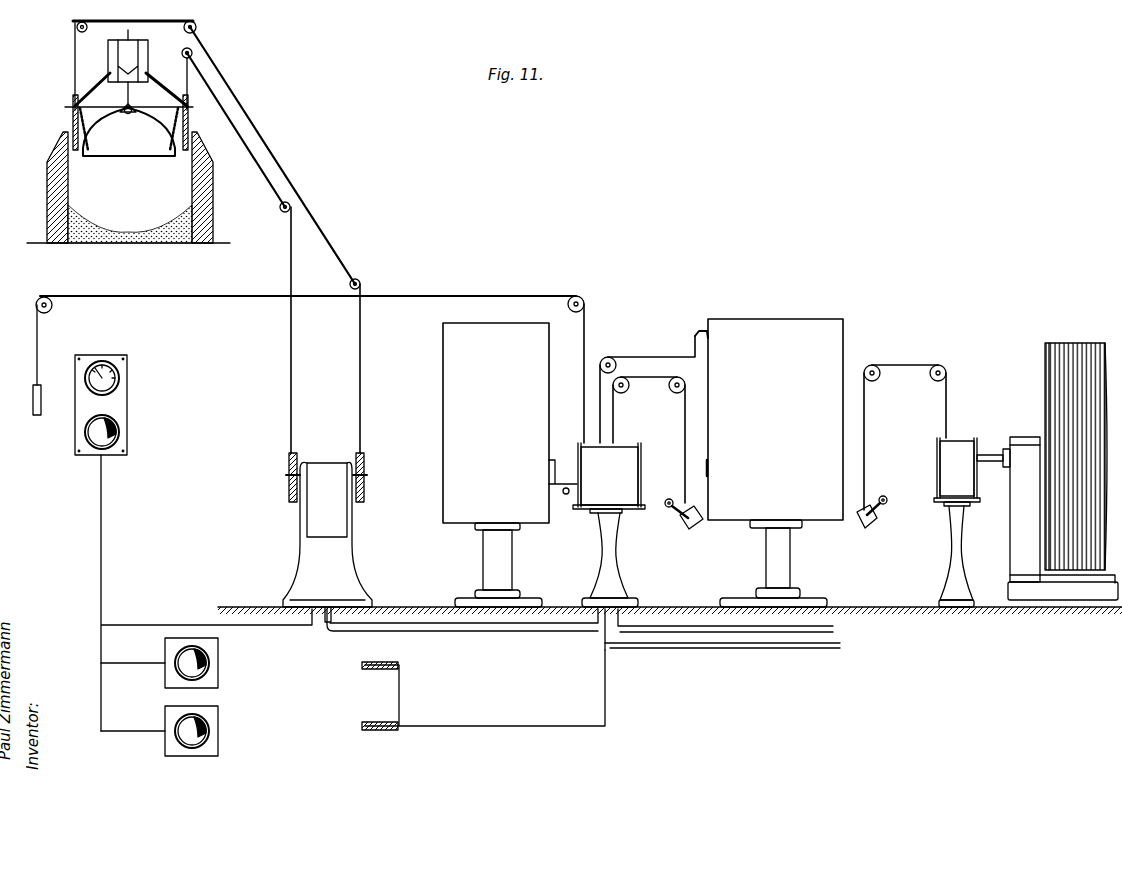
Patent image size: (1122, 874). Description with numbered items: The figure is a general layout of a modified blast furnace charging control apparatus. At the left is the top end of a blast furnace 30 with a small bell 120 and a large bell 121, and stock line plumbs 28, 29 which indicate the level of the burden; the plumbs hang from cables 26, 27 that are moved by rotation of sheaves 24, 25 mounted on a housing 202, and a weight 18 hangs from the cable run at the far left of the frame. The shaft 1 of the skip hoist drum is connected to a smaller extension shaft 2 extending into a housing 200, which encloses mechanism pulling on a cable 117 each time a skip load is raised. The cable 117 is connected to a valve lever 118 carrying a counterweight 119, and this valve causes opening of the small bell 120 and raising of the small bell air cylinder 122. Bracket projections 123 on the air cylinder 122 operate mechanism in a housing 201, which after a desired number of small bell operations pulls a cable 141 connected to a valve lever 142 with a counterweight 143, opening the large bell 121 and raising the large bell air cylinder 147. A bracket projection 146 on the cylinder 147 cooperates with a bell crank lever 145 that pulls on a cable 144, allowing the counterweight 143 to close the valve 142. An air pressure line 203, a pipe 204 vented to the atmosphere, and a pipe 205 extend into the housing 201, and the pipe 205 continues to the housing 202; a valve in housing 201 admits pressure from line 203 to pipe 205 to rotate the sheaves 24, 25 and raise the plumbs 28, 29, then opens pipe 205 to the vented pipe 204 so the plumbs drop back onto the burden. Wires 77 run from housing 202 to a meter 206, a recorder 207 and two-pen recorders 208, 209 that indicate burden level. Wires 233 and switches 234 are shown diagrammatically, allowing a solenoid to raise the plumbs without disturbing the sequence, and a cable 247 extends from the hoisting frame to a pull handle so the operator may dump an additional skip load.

The shaft of the skip hoist drum 1 is at (1003, 447).
The extension shaft 2 is at (986, 448).
The counterweight 18 is at (33, 403).
The sheave 24 is at (366, 462).
The sheave 25 is at (288, 462).
The cable 26 is at (362, 358).
The cable 27 is at (289, 357).
The stock line plumb 28 is at (68, 186).
The stock line plumb 29 is at (192, 186).
The top end of blast furnace 30 is at (205, 220).
The wires 77 is at (154, 625).
The cable 117 is at (867, 415).
The valve lever 118 is at (887, 507).
The counterweight 119 is at (870, 530).
The small bell 120 is at (120, 72).
The large bell 121 is at (121, 150).
The small bell air cylinder 122 is at (496, 465).
The bracket projections 123 is at (563, 480).
The cable 141 is at (684, 422).
The valve lever 142 is at (676, 523).
The counterweight 143 is at (690, 531).
The cable 144 is at (670, 336).
The bell crank lever 145 is at (727, 311).
The bracket projection 146 is at (702, 468).
The large bell air cylinder 147 is at (820, 313).
The housing 200 is at (947, 457).
The housing 201 is at (582, 513).
The housing 202 is at (318, 512).
The air pressure line 203 is at (833, 629).
The vented pipe 204 is at (840, 646).
The pipe 205 is at (520, 631).
The meter 206 is at (120, 380).
The recorder 207 is at (122, 430).
The two-pen recorder 208 is at (218, 665).
The two-pen recorder 209 is at (218, 731).
The wires 233 is at (530, 726).
The switches 234 is at (366, 663).
The cable 247 is at (452, 296).